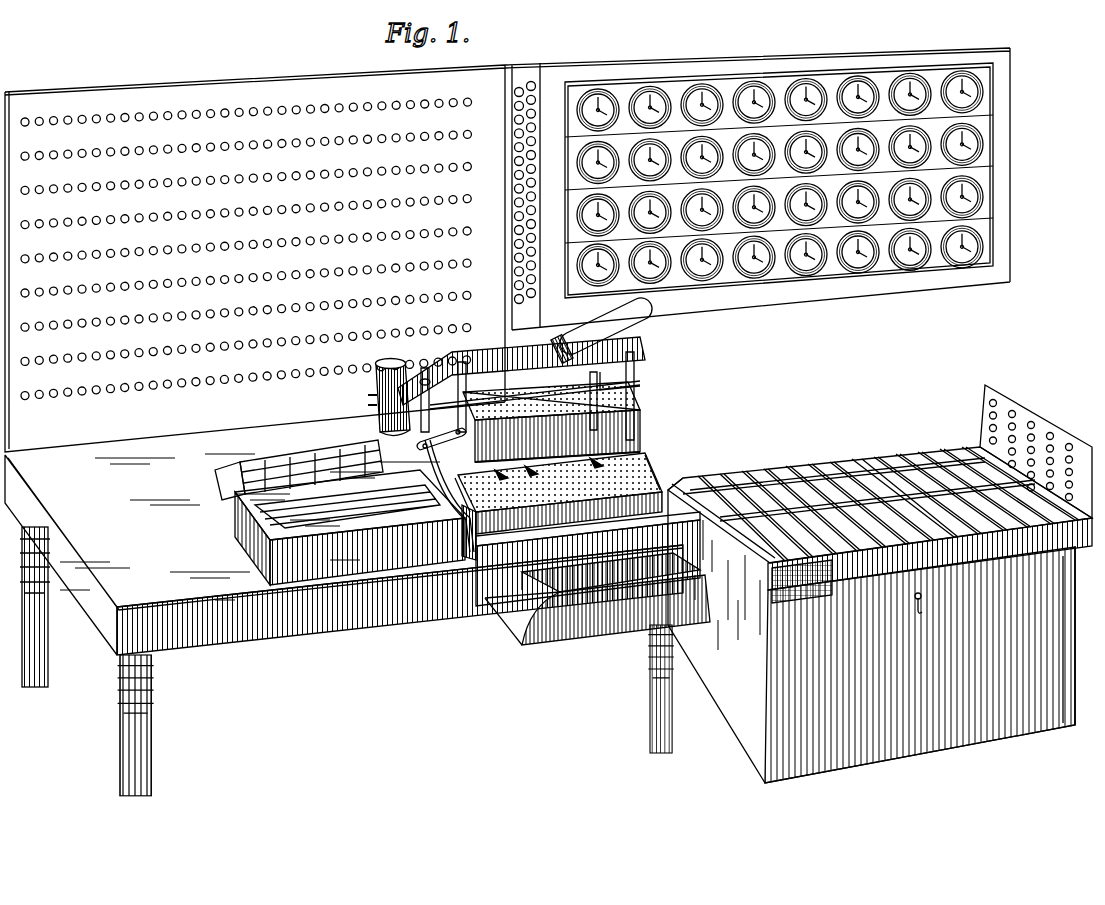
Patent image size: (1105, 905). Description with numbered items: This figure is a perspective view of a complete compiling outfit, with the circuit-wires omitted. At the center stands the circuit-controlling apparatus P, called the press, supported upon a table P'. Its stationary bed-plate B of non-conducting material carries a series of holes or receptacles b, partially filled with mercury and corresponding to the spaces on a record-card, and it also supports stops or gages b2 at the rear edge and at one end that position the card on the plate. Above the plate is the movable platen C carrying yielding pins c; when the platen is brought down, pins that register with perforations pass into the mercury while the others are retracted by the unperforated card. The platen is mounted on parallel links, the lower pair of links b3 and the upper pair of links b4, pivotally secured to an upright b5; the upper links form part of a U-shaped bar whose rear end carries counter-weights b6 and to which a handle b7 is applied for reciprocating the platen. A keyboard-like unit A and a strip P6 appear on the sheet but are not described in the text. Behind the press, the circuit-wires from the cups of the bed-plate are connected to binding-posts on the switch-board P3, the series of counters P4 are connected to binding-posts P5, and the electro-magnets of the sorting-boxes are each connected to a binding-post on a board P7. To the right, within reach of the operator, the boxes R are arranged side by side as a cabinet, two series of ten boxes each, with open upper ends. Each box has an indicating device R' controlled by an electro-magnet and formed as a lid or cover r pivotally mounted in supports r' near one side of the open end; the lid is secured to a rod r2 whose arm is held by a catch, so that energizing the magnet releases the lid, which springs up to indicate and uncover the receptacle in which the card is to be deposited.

The circuit-controlling apparatus P is at (507, 225).
The switch-board P3 is at (255, 272).
The strip of jacks P6 is at (526, 68).
The series of counters P4 is at (855, 270).
The table P' is at (344, 625).
The keyboard A is at (252, 518).
The upper pair of links b4 is at (452, 366).
The handle b7 is at (640, 320).
The counter-weights b6 is at (377, 387).
The upright b5 is at (386, 426).
The lower pair of links b3 is at (441, 436).
The movable platen C is at (551, 422).
The stationary bed-plate B is at (622, 472).
The holes or receptacles b is at (630, 482).
The yielding pins c is at (640, 446).
The stops or gages b2 is at (450, 508).
The binding-posts P5 is at (597, 599).
The boxes R is at (880, 615).
The lid or cover r is at (888, 504).
The indicating device R' is at (877, 479).
The supports r' is at (990, 525).
The rod r2 is at (977, 461).
The board P7 is at (1005, 402).